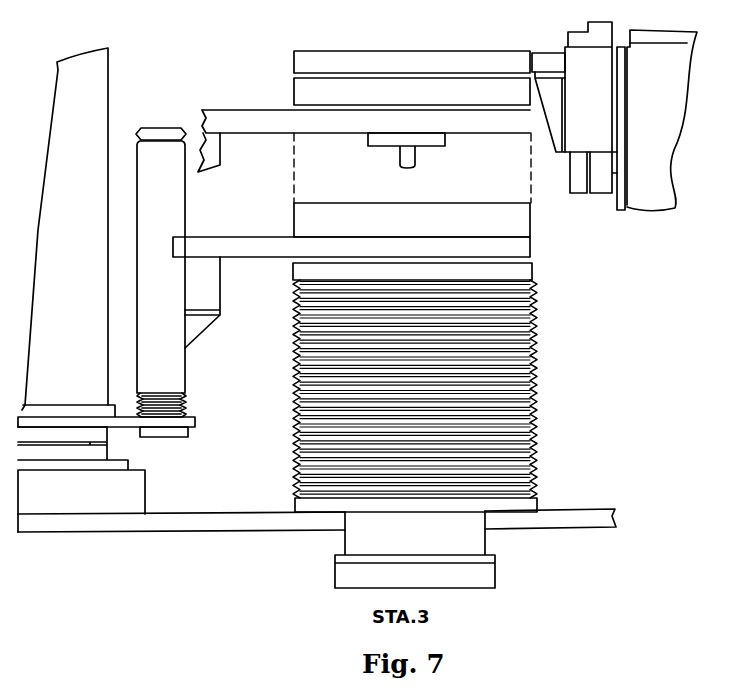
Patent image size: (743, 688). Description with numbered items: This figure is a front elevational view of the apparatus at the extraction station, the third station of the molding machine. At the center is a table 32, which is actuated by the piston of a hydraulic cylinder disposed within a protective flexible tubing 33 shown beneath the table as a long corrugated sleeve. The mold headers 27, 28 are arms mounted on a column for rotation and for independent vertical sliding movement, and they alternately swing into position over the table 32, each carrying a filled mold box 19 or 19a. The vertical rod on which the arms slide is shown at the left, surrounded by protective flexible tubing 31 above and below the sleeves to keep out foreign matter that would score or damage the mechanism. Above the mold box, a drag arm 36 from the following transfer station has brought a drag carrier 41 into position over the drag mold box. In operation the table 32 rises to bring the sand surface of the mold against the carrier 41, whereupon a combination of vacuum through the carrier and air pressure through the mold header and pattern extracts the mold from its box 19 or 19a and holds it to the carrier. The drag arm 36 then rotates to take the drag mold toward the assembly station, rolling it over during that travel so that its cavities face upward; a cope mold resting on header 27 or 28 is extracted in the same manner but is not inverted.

The mold box 19 is at (473, 102).
The mold box 19a is at (525, 218).
The mold header 27 is at (262, 128).
The mold header 28 is at (206, 247).
The protective flexible tubing 31 is at (162, 128).
The table 32 is at (533, 270).
The protective flexible tubing 33 is at (533, 362).
The drag arm 36 is at (663, 85).
The mold carrier 41 is at (445, 55).